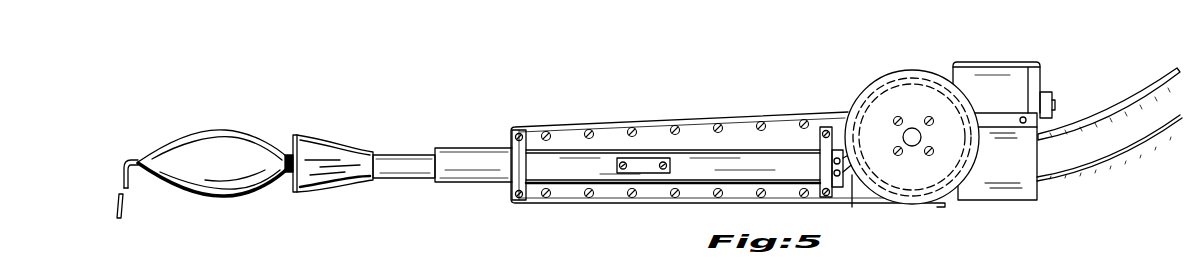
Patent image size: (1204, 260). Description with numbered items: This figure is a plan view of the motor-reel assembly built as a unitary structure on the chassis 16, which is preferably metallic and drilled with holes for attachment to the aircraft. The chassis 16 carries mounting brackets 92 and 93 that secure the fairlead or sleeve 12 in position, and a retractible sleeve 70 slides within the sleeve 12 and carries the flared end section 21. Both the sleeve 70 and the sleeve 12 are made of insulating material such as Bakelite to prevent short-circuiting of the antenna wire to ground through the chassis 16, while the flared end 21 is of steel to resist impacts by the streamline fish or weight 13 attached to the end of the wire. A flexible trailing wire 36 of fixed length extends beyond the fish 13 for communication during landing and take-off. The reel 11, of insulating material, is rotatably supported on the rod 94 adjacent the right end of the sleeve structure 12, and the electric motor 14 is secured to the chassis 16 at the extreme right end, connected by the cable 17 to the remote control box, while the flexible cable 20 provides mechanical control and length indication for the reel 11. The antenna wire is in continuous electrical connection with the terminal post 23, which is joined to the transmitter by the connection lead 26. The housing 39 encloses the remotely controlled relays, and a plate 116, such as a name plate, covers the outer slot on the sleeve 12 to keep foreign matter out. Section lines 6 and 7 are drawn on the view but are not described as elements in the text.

The section line 6 is at (900, 51).
The section line 7 is at (113, 168).
The reel 11 is at (887, 74).
The fairlead 12 is at (483, 141).
The fish 13 is at (249, 133).
The electric motor 14 is at (1000, 70).
The chassis 16 is at (647, 201).
The cable 17 is at (1108, 109).
The flexible cable 20 is at (1157, 133).
The flared end section 21 is at (318, 146).
The terminal post 23 is at (855, 200).
The connection lead 26 is at (868, 143).
The flexible trailing wire 36 is at (126, 206).
The housing 39 is at (1007, 191).
The retractible sleeve 70 is at (394, 155).
The mounting bracket 92 is at (528, 150).
The mounting bracket 93 is at (818, 137).
The rod 94 is at (916, 145).
The plate 116 is at (645, 165).